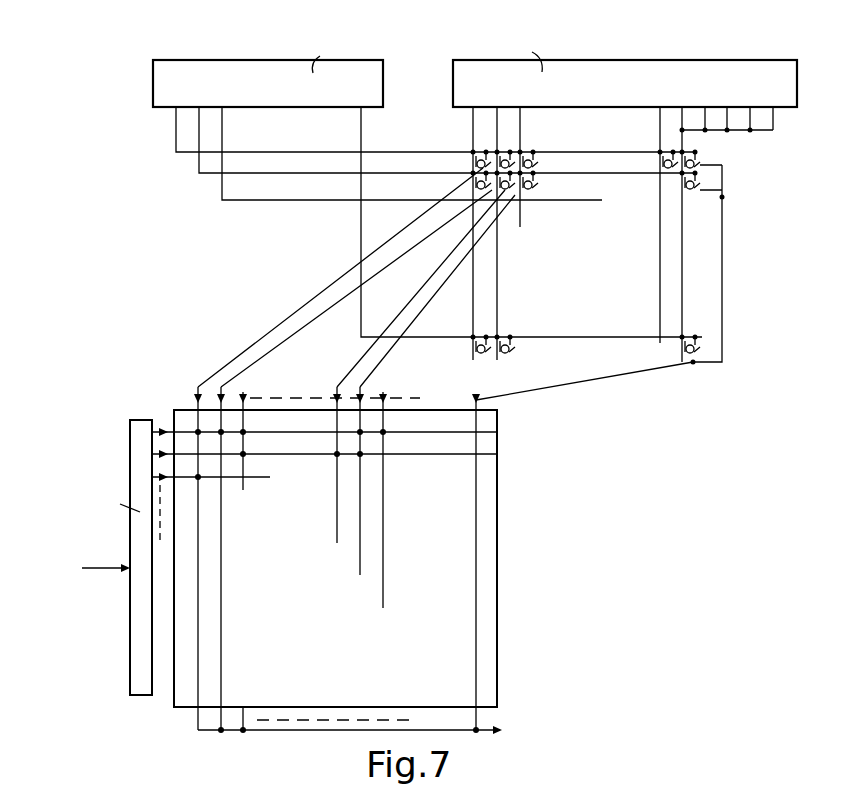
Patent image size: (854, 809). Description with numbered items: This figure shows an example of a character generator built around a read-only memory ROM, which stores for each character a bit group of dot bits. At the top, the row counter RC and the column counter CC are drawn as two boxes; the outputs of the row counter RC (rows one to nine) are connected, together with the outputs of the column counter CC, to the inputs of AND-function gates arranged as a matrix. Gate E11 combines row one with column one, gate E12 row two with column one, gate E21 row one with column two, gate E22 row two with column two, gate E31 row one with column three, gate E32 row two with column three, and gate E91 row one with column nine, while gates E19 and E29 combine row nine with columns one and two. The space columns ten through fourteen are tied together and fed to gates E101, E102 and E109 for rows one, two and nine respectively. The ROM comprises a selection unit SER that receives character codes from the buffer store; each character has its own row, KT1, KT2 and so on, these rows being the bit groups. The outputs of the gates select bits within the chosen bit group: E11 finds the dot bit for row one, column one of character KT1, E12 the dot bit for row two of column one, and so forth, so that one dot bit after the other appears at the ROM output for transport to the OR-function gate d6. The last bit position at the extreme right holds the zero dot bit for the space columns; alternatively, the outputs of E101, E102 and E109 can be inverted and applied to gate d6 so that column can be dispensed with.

The row counter RC is at (254, 74).
The column counter CC is at (594, 74).
The AND-function gate E11 is at (468, 160).
The AND-function gate E12 is at (470, 190).
The AND-function gate E21 is at (516, 158).
The AND-function gate E22 is at (514, 197).
The AND-function gate E31 is at (540, 162).
The AND-function gate E32 is at (540, 186).
The AND-function gate E91 is at (665, 160).
The AND-function gate E101 is at (706, 168).
The AND-function gate E102 is at (706, 190).
The AND-function gate E19 is at (473, 352).
The AND-function gate E29 is at (516, 352).
The AND-function gate E109 is at (705, 352).
The selection unit SER is at (143, 428).
The character generator ROM is at (447, 524).
The character row KT1 is at (487, 437).
The character row KT2 is at (487, 459).
The OR-function gate d6 is at (364, 732).